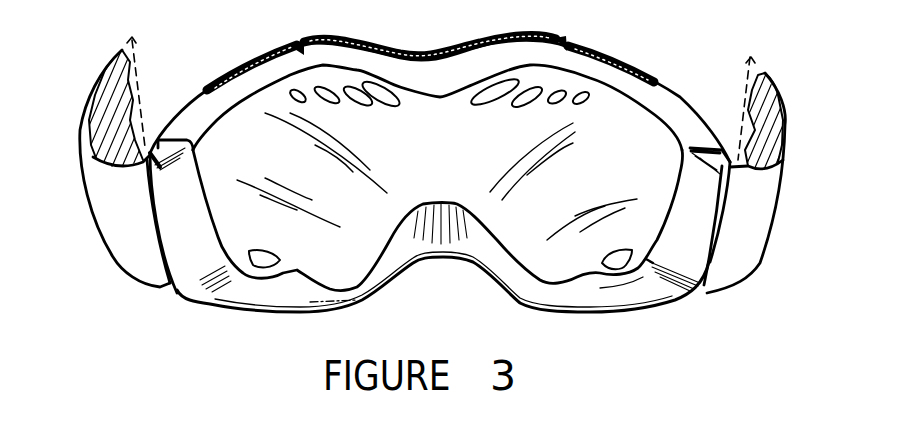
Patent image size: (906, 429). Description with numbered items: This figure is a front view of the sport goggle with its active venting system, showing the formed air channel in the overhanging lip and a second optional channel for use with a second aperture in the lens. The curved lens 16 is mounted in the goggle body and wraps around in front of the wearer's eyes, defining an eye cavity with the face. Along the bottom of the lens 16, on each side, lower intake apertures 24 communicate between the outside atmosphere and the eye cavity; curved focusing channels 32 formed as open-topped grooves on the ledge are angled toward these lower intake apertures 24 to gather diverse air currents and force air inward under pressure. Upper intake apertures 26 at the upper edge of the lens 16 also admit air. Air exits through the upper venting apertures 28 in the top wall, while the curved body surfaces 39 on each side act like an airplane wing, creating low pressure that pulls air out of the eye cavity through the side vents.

The lens 16 is at (240, 140).
The lower intake aperture 24 is at (243, 270).
The upper intake aperture 26 is at (517, 102).
The upper venting aperture 28 is at (259, 52).
The focusing channel 32 is at (280, 288).
The curved body surface 39 is at (201, 237).